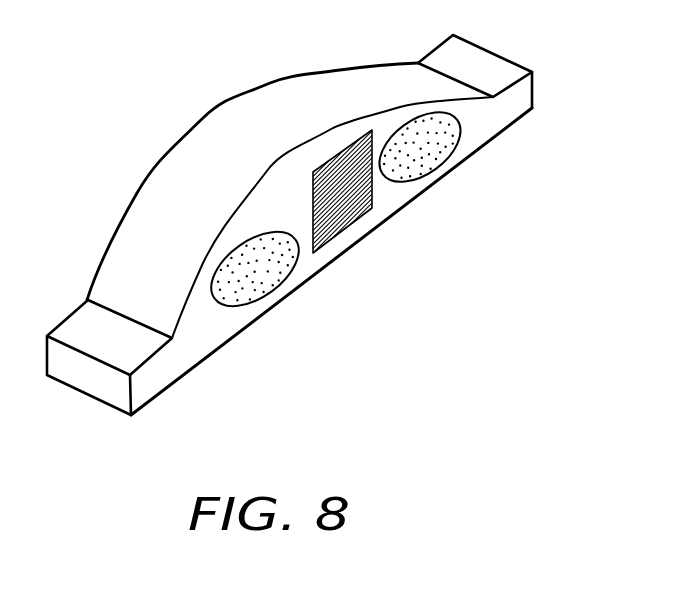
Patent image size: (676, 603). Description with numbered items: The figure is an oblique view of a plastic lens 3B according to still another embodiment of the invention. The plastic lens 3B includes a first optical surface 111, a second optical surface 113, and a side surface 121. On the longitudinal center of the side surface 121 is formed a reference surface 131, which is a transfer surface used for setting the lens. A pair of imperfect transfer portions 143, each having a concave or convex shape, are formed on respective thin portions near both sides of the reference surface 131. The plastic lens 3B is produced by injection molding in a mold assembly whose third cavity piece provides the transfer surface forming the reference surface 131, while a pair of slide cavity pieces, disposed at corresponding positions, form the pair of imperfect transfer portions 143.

The plastic lens 3B is at (166, 110).
The first optical surface 111 is at (343, 83).
The second optical surface 113 is at (334, 268).
The side surface 121 is at (200, 348).
The reference surface 131 is at (372, 203).
The imperfect transfer portions 143 is at (258, 288).